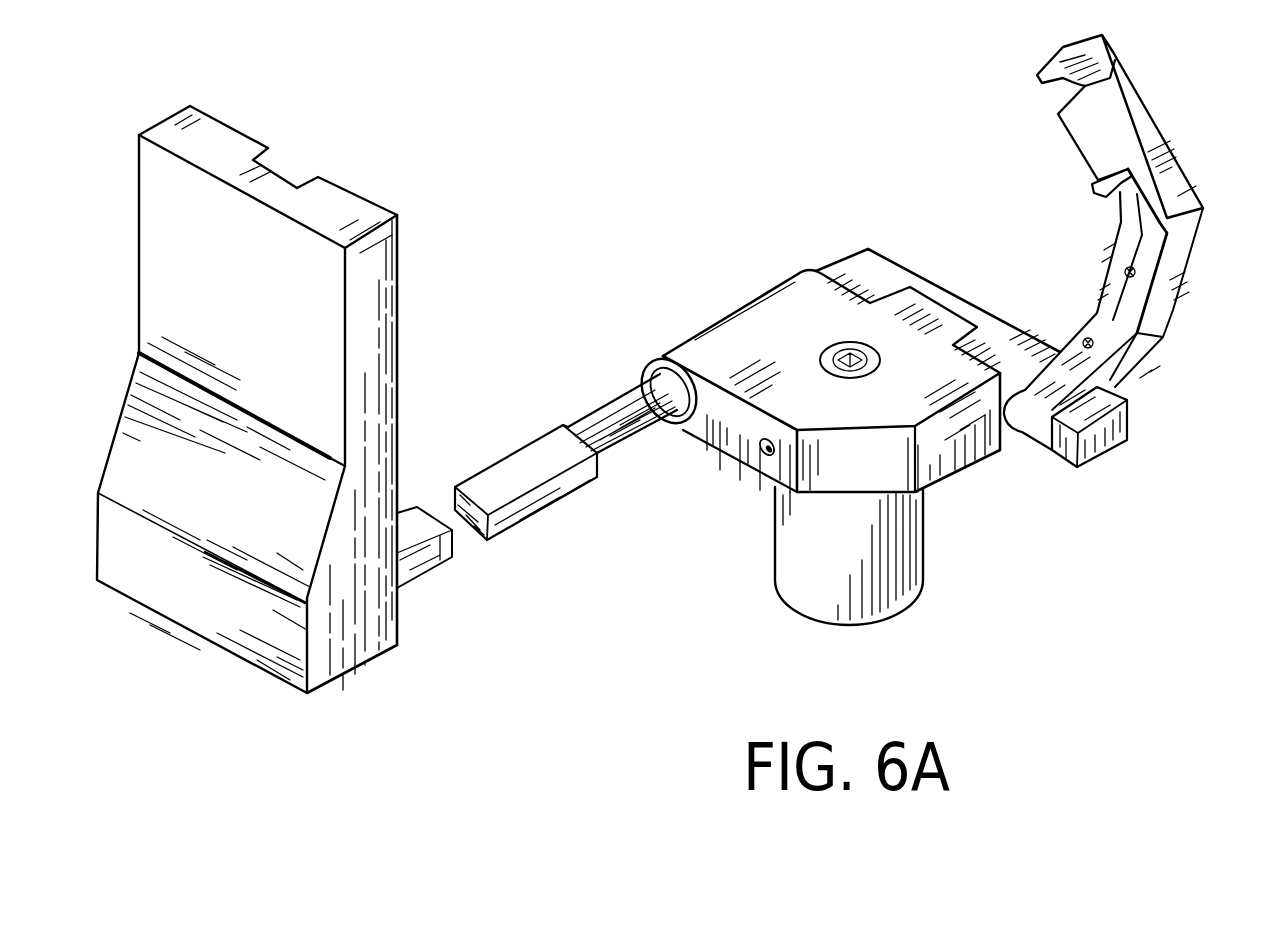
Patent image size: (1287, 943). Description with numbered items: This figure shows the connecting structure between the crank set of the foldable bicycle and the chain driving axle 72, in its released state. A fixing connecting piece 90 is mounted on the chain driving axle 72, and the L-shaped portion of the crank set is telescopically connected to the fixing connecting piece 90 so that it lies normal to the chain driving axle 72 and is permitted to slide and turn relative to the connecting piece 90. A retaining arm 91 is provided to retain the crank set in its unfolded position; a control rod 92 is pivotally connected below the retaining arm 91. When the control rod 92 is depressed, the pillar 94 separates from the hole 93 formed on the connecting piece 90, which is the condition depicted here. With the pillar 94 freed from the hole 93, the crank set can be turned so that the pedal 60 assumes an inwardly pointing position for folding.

The pedal 60 is at (348, 343).
The chain driving axle 72 is at (922, 560).
The fixing connecting piece 90 is at (752, 322).
The retaining arm 91 is at (1138, 120).
The control rod 92 is at (1147, 287).
The hole 93 is at (760, 456).
The pillar 94 is at (1093, 190).